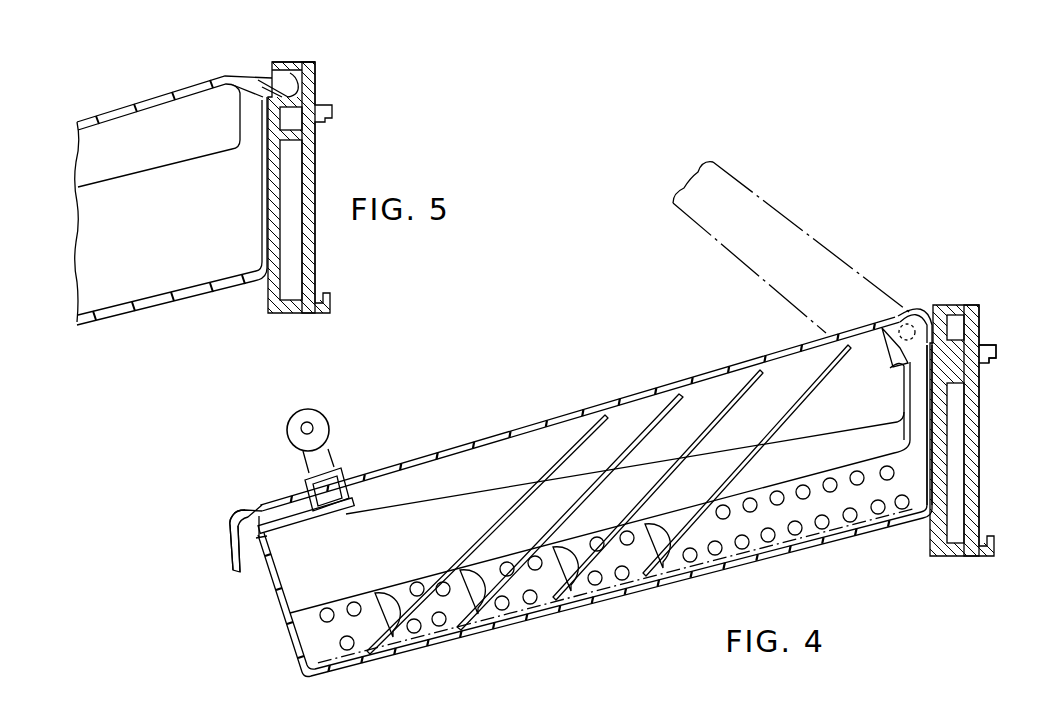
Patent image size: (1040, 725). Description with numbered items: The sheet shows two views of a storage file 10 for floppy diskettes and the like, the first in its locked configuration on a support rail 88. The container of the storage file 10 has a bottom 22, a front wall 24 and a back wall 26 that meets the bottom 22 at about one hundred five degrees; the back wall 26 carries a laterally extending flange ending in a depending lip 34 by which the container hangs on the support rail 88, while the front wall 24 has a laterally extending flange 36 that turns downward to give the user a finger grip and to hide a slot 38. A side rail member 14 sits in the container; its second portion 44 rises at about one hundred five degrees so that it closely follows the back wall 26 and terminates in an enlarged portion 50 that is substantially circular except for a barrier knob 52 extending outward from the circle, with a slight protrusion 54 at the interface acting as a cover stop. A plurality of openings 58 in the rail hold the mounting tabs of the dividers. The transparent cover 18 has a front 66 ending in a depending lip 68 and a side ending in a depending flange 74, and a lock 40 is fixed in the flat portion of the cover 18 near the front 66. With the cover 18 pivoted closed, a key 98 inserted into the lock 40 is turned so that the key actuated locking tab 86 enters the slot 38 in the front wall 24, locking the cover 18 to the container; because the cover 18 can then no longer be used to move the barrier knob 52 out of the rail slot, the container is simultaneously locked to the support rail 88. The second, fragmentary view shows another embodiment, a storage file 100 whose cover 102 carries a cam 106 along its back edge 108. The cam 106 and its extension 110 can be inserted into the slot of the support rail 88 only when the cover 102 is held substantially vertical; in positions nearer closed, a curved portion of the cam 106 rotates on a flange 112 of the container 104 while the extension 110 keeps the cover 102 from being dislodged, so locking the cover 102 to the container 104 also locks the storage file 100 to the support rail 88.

In FIG. 4, the storage file 10 is at (623, 608).
In FIG. 4, the first side rail member 14 is at (357, 592).
In FIG. 4, the cover 18 is at (560, 420).
In FIG. 4, the bottom 22 is at (512, 633).
In FIG. 4, the front wall 24 is at (297, 636).
In FIG. 4, the back wall 26 is at (934, 443).
In FIG. 5, the depending lip 34 is at (318, 125).
In FIG. 4, the depending lip 34 is at (977, 372).
In FIG. 4, the laterally extending flange 36 is at (231, 568).
In FIG. 4, the slot 38 is at (259, 542).
In FIG. 4, the lock 40 is at (345, 470).
In FIG. 4, the second portion 44 is at (918, 425).
In FIG. 4, the enlarged portion 50 is at (893, 342).
In FIG. 4, the barrier knob 52 is at (978, 333).
In FIG. 4, the protrusion 54 is at (921, 316).
In FIG. 4, the openings 58 is at (478, 580).
In FIG. 4, the front 66 is at (237, 516).
In FIG. 4, the depending lip 68 is at (229, 528).
In FIG. 4, the depending flange 74 is at (452, 497).
In FIG. 4, the locking tab 86 is at (309, 528).
In FIG. 5, the support rail 88 is at (314, 64).
In FIG. 4, the support rail 88 is at (976, 306).
In FIG. 4, the key 98 is at (329, 420).
In FIG. 5, the storage file 100 is at (76, 226).
In FIG. 5, the cover 102 is at (128, 96).
In FIG. 5, the container 104 is at (160, 300).
In FIG. 5, the cam 106 is at (293, 96).
In FIG. 5, the back edge 108 is at (300, 81).
In FIG. 5, the extension 110 is at (296, 73).
In FIG. 5, the flange 112 is at (302, 113).